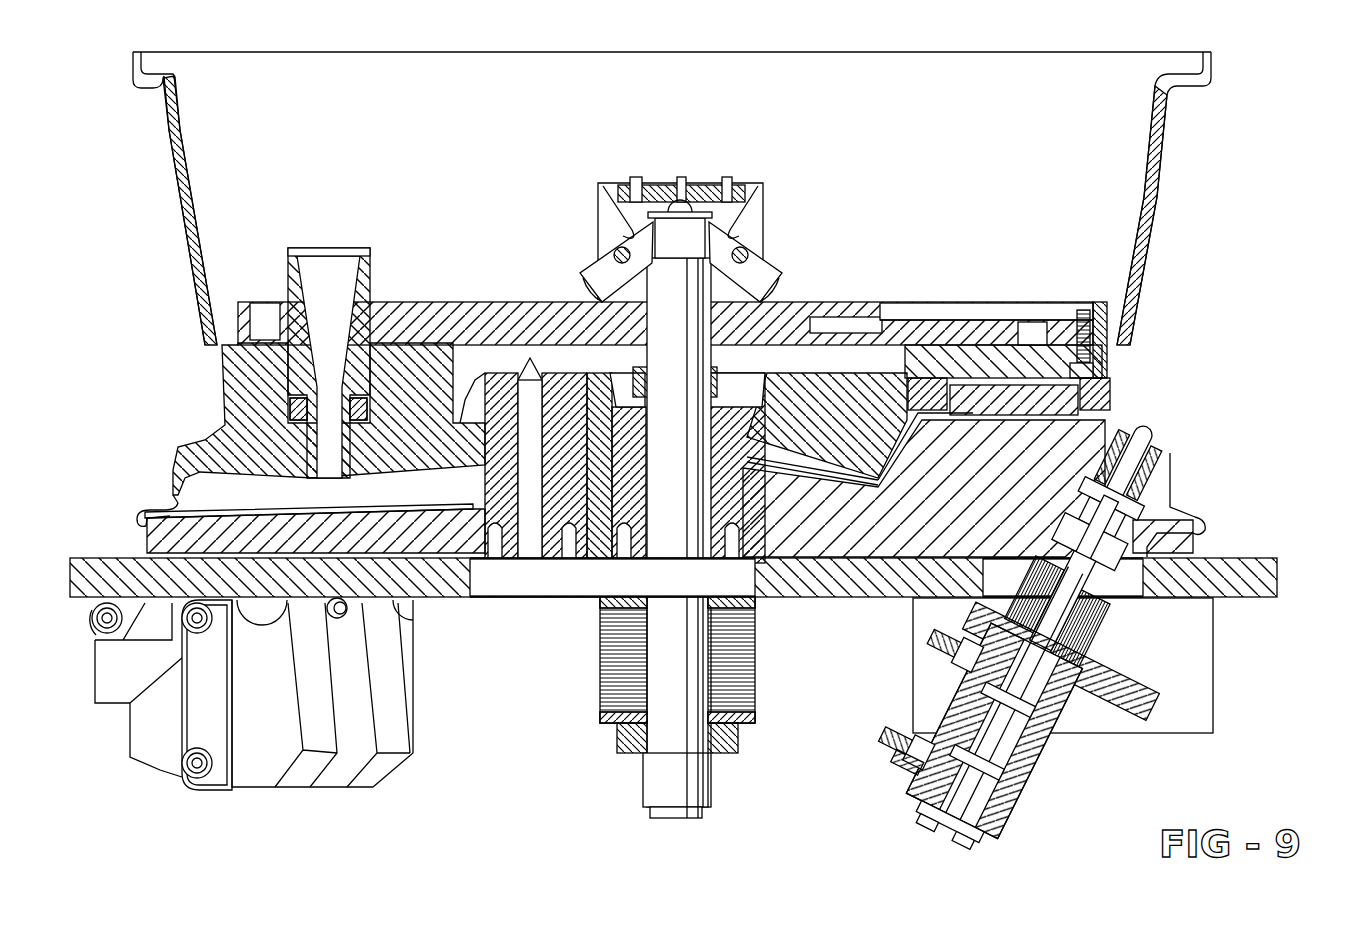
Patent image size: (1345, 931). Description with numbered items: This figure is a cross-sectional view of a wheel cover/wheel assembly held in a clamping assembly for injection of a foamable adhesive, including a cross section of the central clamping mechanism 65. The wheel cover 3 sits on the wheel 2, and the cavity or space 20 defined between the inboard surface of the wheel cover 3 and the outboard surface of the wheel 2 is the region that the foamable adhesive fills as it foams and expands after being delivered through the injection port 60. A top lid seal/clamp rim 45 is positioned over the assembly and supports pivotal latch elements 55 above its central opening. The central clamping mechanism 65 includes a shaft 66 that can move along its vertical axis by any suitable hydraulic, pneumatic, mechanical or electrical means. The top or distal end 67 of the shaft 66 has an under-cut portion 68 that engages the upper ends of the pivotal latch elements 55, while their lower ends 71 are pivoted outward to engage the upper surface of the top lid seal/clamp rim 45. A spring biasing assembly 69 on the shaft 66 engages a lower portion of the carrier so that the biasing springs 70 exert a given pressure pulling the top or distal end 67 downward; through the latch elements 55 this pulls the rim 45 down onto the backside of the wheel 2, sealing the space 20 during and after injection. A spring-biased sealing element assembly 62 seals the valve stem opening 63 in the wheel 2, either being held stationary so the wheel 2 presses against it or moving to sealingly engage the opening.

The wheel 2 is at (1160, 205).
The wheel cover 3 is at (180, 503).
The cavity or space 20 is at (270, 510).
The top lid seal/clamp rim 45 is at (440, 302).
The pivotal latch elements 55 is at (580, 273).
The injection port 60 is at (330, 248).
The spring-biased sealing element assembly 62 is at (1112, 644).
The valve stem opening 63 is at (1163, 447).
The central clamping mechanism 65 is at (594, 750).
The shaft 66 is at (652, 790).
The top or distal end 67 is at (700, 218).
The under-cut portion 68 is at (668, 212).
The spring biasing assembly 69 is at (766, 645).
The biasing springs 70 is at (755, 695).
The lower ends 71 is at (598, 296).